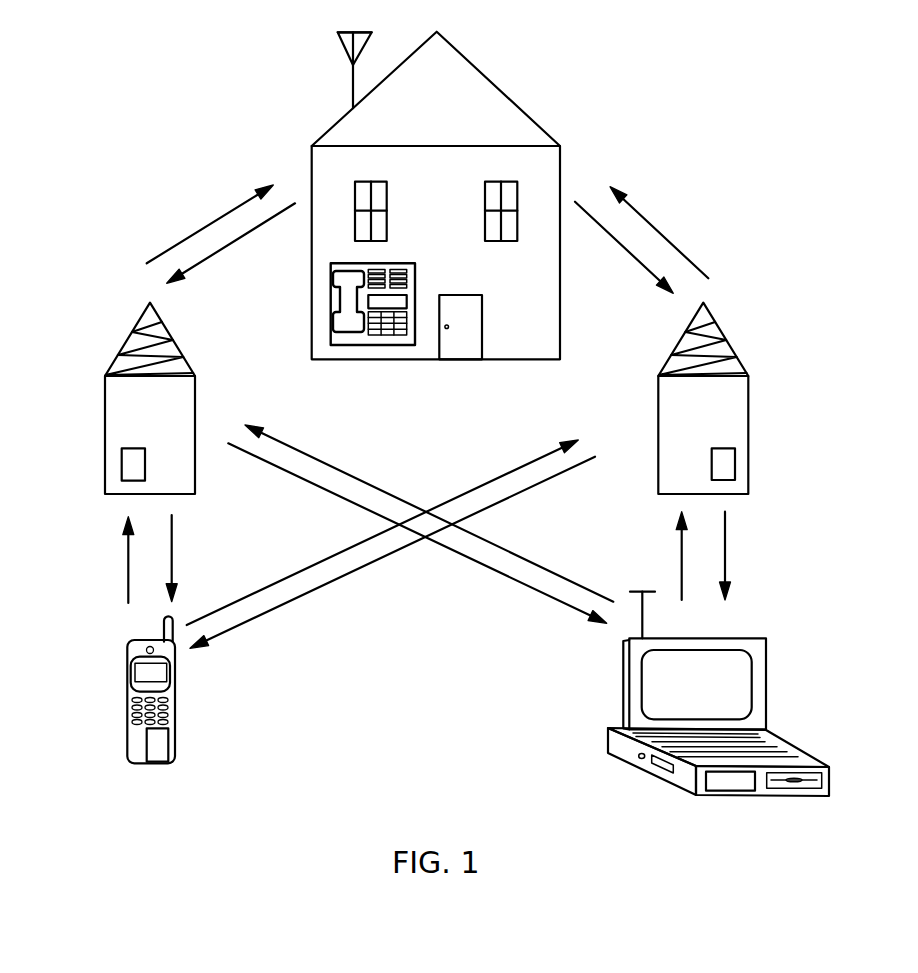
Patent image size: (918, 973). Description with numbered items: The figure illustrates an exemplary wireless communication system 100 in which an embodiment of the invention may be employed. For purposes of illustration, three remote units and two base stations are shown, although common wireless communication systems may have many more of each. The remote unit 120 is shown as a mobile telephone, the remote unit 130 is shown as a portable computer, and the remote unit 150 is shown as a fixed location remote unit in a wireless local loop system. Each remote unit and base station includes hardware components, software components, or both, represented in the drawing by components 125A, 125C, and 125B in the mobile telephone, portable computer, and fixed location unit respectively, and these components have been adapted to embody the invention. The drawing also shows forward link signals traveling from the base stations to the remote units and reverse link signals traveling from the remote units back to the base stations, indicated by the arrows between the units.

The wireless communication system 100 is at (129, 40).
The remote unit 120 is at (130, 647).
The component 125A is at (158, 748).
The component 125B is at (397, 346).
The component 125C is at (735, 782).
The remote unit 130 is at (747, 637).
The remote unit 150 is at (330, 311).